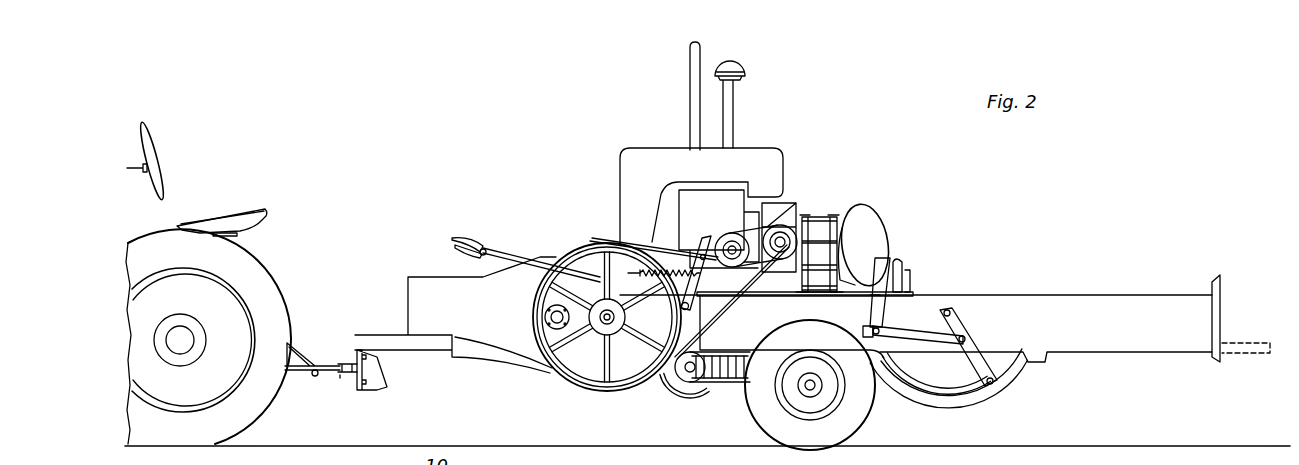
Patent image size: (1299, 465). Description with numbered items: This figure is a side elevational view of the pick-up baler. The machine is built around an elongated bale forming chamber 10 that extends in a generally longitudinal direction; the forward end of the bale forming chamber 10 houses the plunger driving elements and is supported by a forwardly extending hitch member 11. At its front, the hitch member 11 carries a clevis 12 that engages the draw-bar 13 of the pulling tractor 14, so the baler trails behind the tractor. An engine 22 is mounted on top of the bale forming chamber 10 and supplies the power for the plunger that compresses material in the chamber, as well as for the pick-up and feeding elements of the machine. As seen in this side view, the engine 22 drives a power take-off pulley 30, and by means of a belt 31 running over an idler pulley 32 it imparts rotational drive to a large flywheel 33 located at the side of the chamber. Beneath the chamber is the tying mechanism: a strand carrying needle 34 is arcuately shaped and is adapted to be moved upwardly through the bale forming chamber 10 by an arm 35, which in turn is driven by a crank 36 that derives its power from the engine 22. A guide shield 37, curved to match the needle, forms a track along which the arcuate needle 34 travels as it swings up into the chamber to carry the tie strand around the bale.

The bale forming chamber 10 is at (1039, 289).
The hitch member 11 is at (367, 336).
The clevis 12 is at (340, 380).
The draw-bar 13 is at (320, 373).
The pulling tractor 14 is at (283, 269).
The engine 22 is at (758, 158).
The power take-off pulley 30 is at (787, 223).
The belt 31 is at (727, 310).
The idler pulley 32 is at (730, 243).
The flywheel 33 is at (575, 377).
The needle 34 is at (948, 400).
The arm 35 is at (982, 353).
The crank 36 is at (903, 330).
The guide shield 37 is at (993, 398).